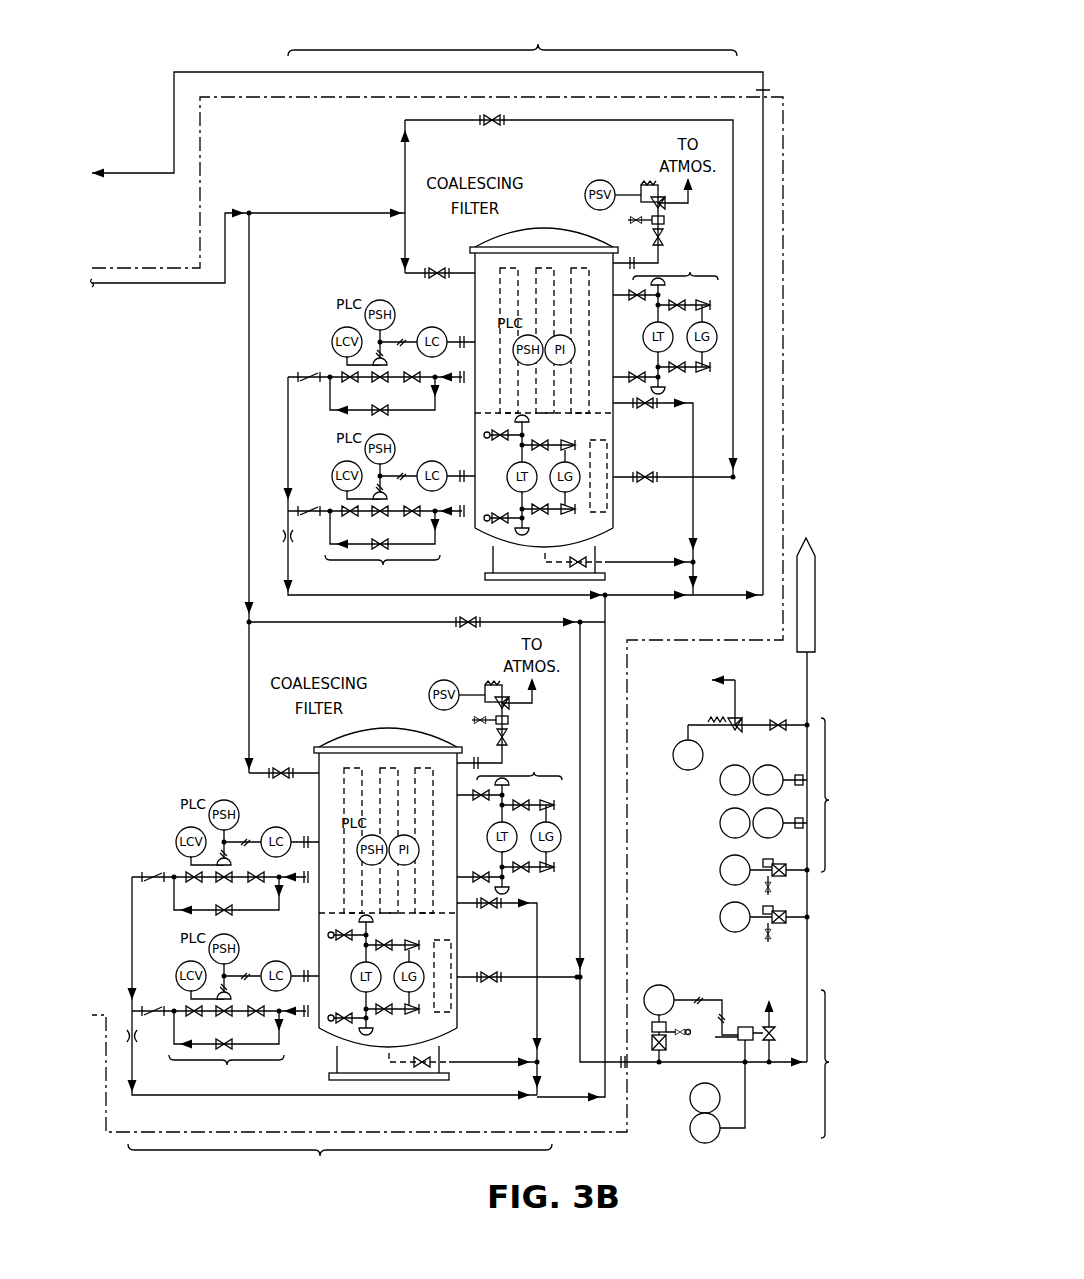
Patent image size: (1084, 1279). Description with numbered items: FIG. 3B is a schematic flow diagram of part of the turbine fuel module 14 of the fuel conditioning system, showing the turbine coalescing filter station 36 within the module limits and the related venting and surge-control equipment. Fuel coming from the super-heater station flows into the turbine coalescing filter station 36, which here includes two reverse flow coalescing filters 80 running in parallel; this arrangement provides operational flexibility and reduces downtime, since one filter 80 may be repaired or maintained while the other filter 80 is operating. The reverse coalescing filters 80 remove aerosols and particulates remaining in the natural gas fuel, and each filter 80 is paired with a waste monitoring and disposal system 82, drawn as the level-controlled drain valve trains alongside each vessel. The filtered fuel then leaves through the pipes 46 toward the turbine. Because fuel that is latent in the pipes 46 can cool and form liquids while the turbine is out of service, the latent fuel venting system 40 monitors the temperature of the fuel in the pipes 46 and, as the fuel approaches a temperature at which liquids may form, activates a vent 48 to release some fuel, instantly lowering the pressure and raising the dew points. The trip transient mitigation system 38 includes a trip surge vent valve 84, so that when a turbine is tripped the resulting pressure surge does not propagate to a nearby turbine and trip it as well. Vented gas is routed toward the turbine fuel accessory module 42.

The turbine fuel module 14 is at (676, 42).
The turbine coalescing filter station 36 is at (538, 44).
The trip transient mitigation system 38 is at (829, 1062).
The latent fuel venting system 40 is at (829, 800).
The turbine fuel accessory module 42 is at (820, 553).
The pipes 46 is at (249, 398).
The vent 48 is at (745, 722).
The reverse flow coalescing filter 80 is at (520, 228).
The waste monitoring and disposal system 82 is at (383, 565).
The trip surge vent valve 84 is at (772, 1042).